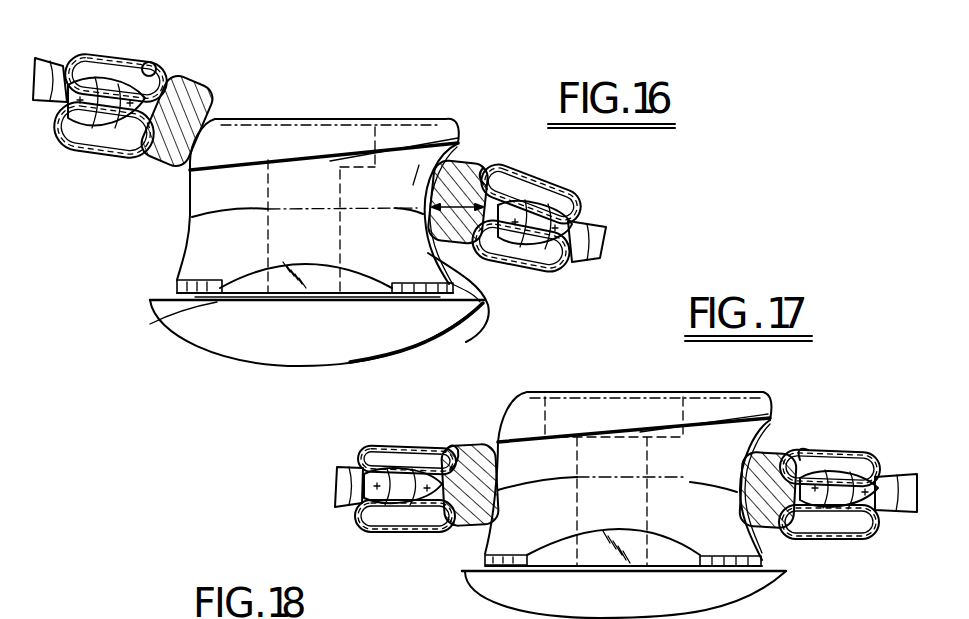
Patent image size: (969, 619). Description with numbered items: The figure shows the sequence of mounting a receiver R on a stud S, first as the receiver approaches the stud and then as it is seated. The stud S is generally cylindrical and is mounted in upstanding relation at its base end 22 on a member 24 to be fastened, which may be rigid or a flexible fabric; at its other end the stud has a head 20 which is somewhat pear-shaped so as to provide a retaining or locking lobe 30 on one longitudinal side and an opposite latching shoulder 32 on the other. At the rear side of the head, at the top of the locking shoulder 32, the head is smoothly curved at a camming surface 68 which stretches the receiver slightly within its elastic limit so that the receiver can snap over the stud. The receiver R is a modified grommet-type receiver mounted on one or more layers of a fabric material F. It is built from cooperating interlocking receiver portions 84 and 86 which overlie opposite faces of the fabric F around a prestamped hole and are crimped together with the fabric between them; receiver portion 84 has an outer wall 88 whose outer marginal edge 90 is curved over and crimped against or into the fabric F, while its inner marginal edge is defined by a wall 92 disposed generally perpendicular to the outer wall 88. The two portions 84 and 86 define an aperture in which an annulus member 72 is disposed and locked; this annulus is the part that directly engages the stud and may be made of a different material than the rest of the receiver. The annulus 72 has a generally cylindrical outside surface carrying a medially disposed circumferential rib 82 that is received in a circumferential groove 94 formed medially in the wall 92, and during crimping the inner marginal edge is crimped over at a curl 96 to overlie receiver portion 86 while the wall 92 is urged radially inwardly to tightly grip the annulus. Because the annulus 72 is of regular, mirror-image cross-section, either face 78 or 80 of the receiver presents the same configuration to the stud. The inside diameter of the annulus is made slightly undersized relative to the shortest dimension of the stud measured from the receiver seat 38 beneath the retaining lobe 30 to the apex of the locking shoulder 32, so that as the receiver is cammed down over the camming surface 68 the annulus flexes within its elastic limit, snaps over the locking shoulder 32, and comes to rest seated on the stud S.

In FIG. 16, the head 20 is at (394, 120).
In FIG. 16, the base end 22 is at (161, 321).
In FIG. 16, the member 24 is at (263, 342).
In FIG. 16, the retaining lobe 30 is at (446, 120).
In FIG. 17, the retaining lobe 30 is at (770, 396).
In FIG. 16, the latching shoulder 32 is at (165, 165).
In FIG. 17, the latching shoulder 32 is at (498, 435).
In FIG. 16, the receiver seat 38 is at (485, 308).
In FIG. 16, the receiver camming surface 68 is at (207, 94).
In FIG. 17, the receiver camming surface 68 is at (503, 407).
In FIG. 16, the annulus member 72 is at (184, 82).
In FIG. 16, the face of the receiver 78 is at (204, 145).
In FIG. 16, the face of the receiver 80 is at (146, 50).
In FIG. 16, the circumferential rib 82 is at (108, 142).
In FIG. 16, the receiver portion 84 is at (560, 275).
In FIG. 16, the receiver portion 86 is at (543, 184).
In FIG. 16, the outer wall 88 is at (118, 136).
In FIG. 16, the outer marginal edge 90 is at (53, 125).
In FIG. 16, the inner marginal edge wall 92 is at (482, 160).
In FIG. 16, the circumferential groove 94 is at (498, 258).
In FIG. 16, the curl 96 is at (154, 60).
In FIG. 16, the receiver R is at (547, 231).
In FIG. 17, the receiver R is at (805, 441).
In FIG. 16, the fabric material F is at (600, 228).
In FIG. 16, the stud S is at (395, 196).
In FIG. 17, the stud S is at (714, 464).